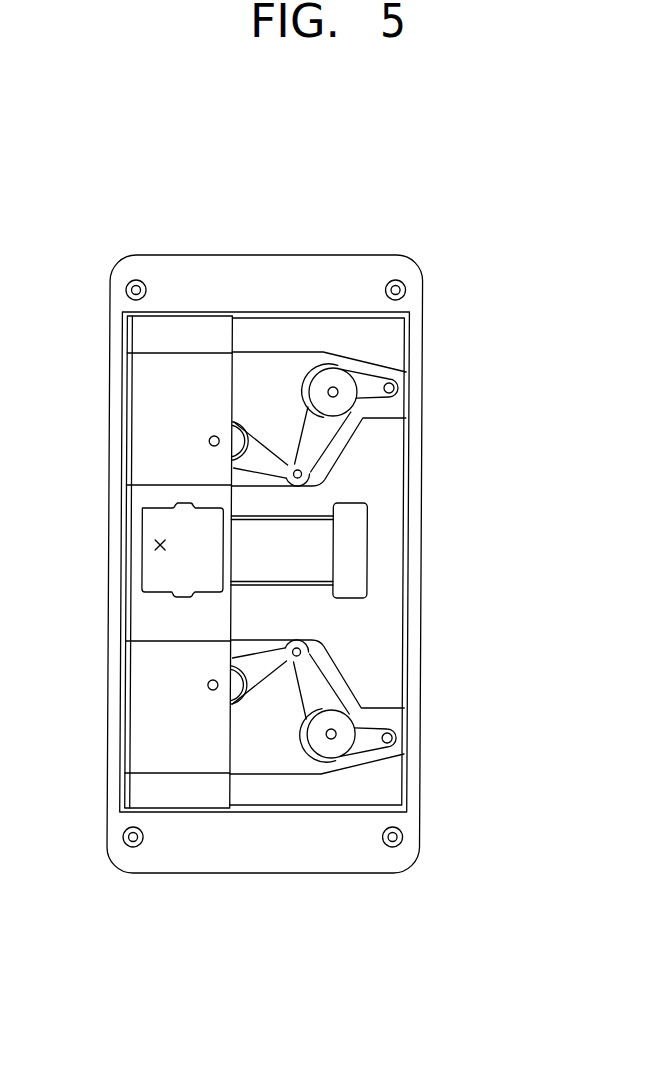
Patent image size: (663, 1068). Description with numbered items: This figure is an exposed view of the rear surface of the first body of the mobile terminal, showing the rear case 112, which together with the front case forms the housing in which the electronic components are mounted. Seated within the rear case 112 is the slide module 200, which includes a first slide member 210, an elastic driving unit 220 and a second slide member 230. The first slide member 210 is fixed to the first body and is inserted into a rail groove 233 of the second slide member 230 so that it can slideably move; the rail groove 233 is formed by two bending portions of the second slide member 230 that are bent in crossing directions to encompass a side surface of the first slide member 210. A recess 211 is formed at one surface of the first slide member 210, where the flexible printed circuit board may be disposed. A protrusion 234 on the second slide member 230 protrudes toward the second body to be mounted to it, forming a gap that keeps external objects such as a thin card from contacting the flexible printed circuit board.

The rear case 112 is at (268, 267).
The slide module 200 is at (368, 563).
The first slide member 210 is at (388, 523).
The recess 211 is at (282, 542).
The elastic driving unit 220 is at (399, 718).
The second slide member 230 is at (183, 657).
The rail groove 233 is at (162, 545).
The protrusion 234 is at (150, 622).